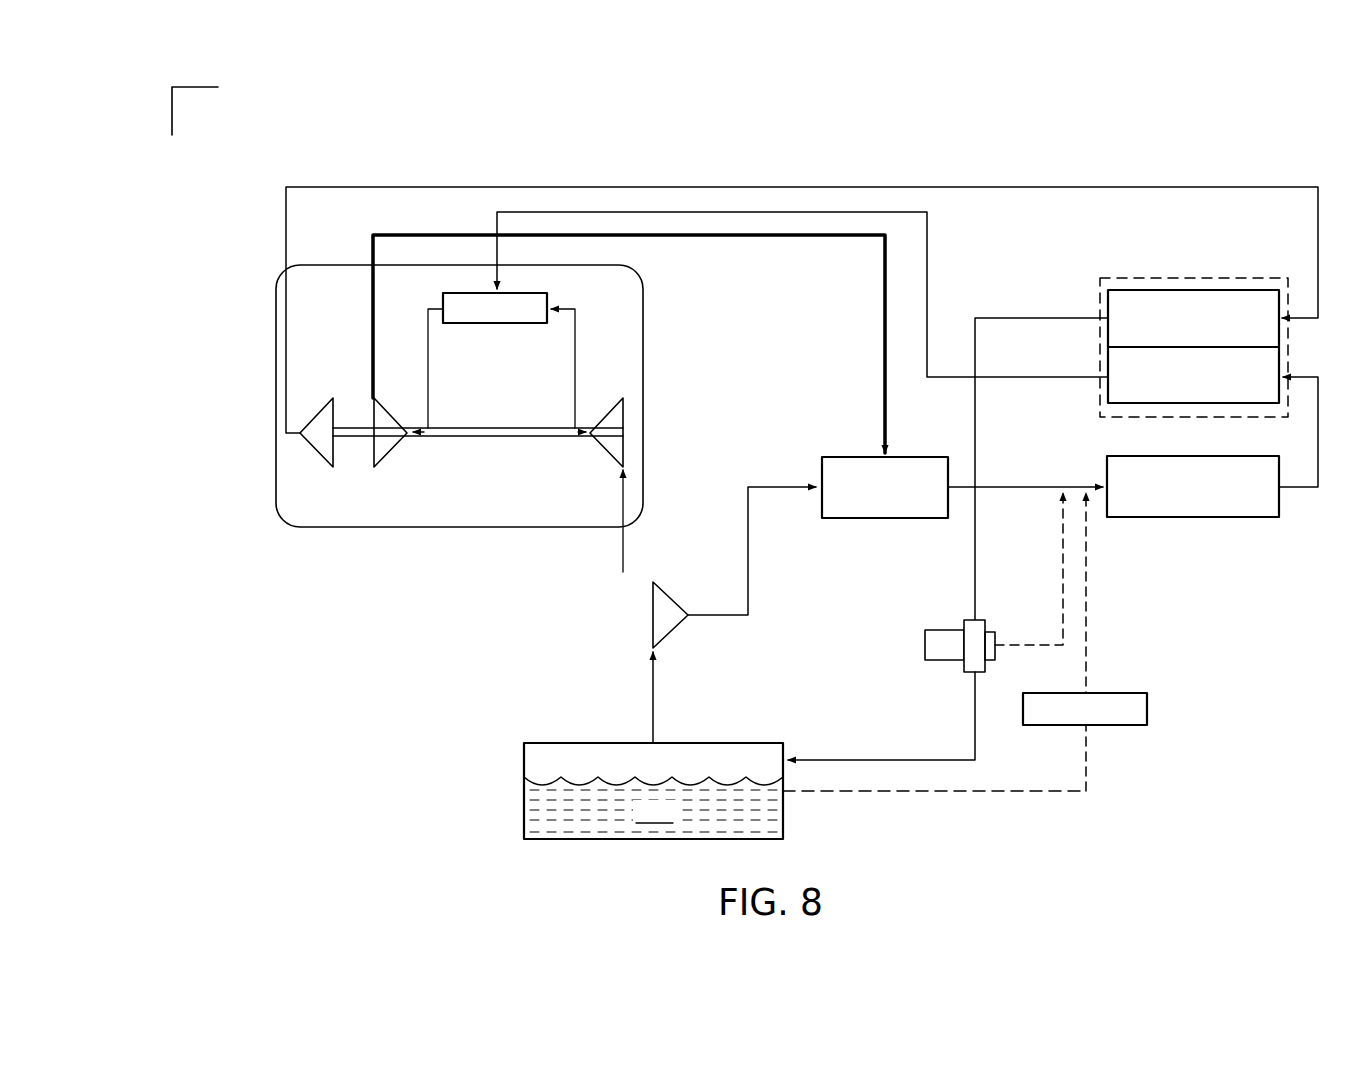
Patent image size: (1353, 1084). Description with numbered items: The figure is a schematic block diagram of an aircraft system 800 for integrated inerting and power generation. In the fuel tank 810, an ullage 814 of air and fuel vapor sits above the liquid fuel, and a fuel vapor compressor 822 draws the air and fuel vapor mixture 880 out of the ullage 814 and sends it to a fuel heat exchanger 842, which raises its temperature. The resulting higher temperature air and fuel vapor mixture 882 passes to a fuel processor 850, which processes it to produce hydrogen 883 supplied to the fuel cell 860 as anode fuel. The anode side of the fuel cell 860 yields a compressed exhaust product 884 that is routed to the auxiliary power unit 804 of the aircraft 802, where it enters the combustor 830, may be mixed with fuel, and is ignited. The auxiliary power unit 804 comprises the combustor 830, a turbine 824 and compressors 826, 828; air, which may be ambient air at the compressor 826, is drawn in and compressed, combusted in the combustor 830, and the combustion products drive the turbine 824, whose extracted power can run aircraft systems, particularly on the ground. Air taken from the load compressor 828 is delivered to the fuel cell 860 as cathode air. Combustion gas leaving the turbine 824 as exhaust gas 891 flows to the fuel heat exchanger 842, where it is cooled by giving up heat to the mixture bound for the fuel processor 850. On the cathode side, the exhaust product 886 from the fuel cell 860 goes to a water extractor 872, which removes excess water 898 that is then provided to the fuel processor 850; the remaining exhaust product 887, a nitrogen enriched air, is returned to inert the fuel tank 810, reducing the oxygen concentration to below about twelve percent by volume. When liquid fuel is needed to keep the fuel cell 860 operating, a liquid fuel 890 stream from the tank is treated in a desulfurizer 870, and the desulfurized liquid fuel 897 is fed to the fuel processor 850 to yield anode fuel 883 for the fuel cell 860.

The aircraft system 800 is at (281, 162).
The aircraft 802 is at (172, 103).
The auxiliary power unit 804 is at (350, 265).
The fuel tank 810 is at (615, 767).
The ullage 814 is at (532, 743).
The fuel vapor compressor 822 is at (672, 592).
The turbine 824 is at (397, 449).
The compressor 826 is at (604, 448).
The load compressor 828 is at (320, 462).
The combustor 830 is at (497, 323).
The fuel heat exchanger 842 is at (880, 518).
The fuel processor 850 is at (1190, 518).
The fuel cell 860 is at (1210, 278).
The desulfurizer 870 is at (1147, 703).
The water extractor 872 is at (932, 630).
The air and fuel vapor mixture 880 is at (653, 710).
The higher temperature air and fuel vapor mixture 882 is at (1030, 487).
The hydrogen 883 is at (1300, 488).
The compressed exhaust product 884 is at (927, 242).
The cathode exhaust product 886 is at (470, 187).
The exhaust product 887 is at (975, 728).
The liquid fuel line 890 is at (1086, 742).
The exhaust gas 891 is at (775, 236).
The desulfurized liquid fuel 897 is at (1086, 596).
The excess water 898 is at (1063, 595).